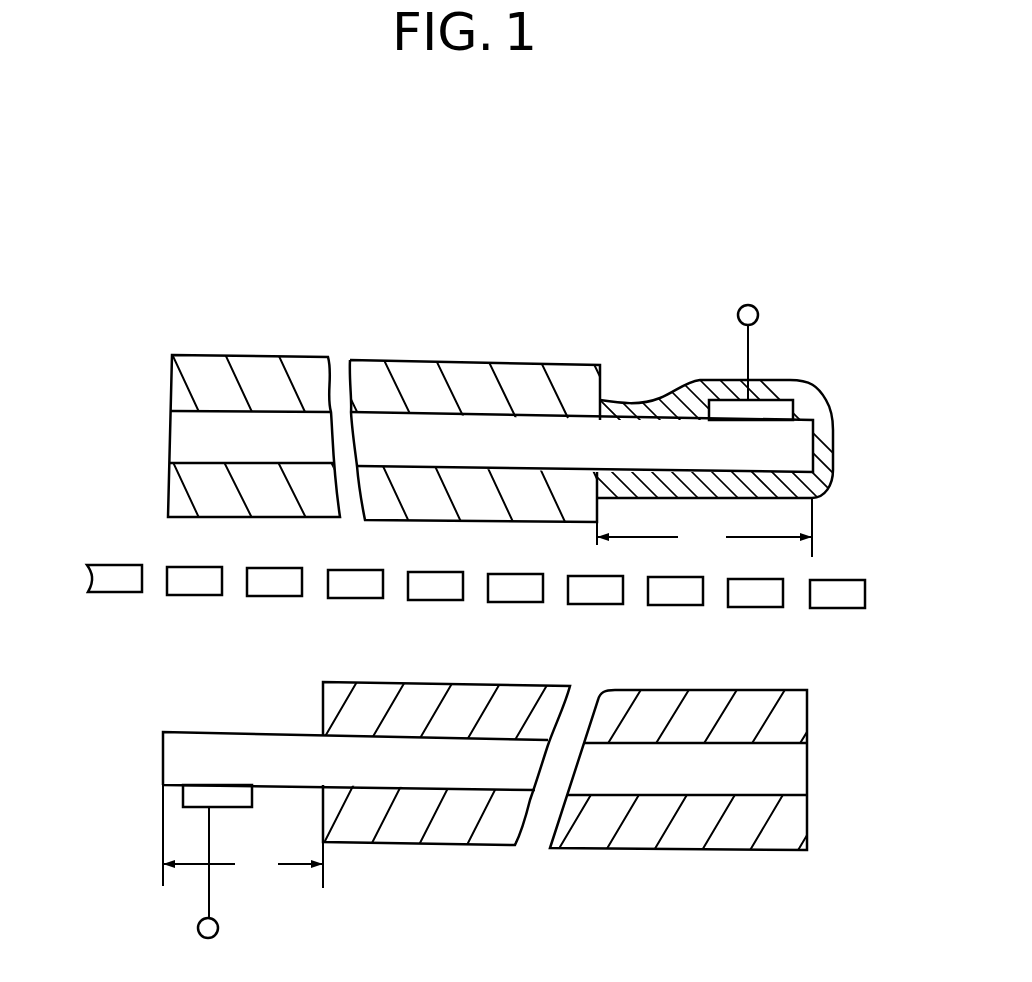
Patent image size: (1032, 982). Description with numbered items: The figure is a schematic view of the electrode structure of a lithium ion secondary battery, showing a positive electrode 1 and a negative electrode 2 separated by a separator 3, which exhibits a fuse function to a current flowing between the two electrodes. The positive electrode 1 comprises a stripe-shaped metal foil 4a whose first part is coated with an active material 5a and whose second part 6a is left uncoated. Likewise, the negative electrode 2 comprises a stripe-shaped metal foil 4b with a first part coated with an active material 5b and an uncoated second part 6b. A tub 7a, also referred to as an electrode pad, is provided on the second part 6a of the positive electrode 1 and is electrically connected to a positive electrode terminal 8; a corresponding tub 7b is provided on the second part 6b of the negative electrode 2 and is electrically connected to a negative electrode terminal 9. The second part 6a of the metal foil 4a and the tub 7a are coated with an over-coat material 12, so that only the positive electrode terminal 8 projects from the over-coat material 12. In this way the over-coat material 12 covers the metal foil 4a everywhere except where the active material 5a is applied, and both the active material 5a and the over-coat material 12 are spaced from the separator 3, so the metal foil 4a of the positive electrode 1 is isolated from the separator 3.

The positive electrode 1 is at (640, 345).
The negative electrode 2 is at (666, 887).
The separator 3 is at (843, 593).
The metal foil 4a is at (795, 448).
The metal foil 4b is at (795, 778).
The active material 5a is at (420, 378).
The active material 5b is at (405, 825).
The second part 6a is at (704, 527).
The second part 6b is at (243, 836).
The tub 7a is at (770, 400).
The tub 7b is at (193, 795).
The positive electrode terminal 8 is at (758, 316).
The negative electrode terminal 9 is at (218, 926).
The over-coat material 12 is at (828, 410).